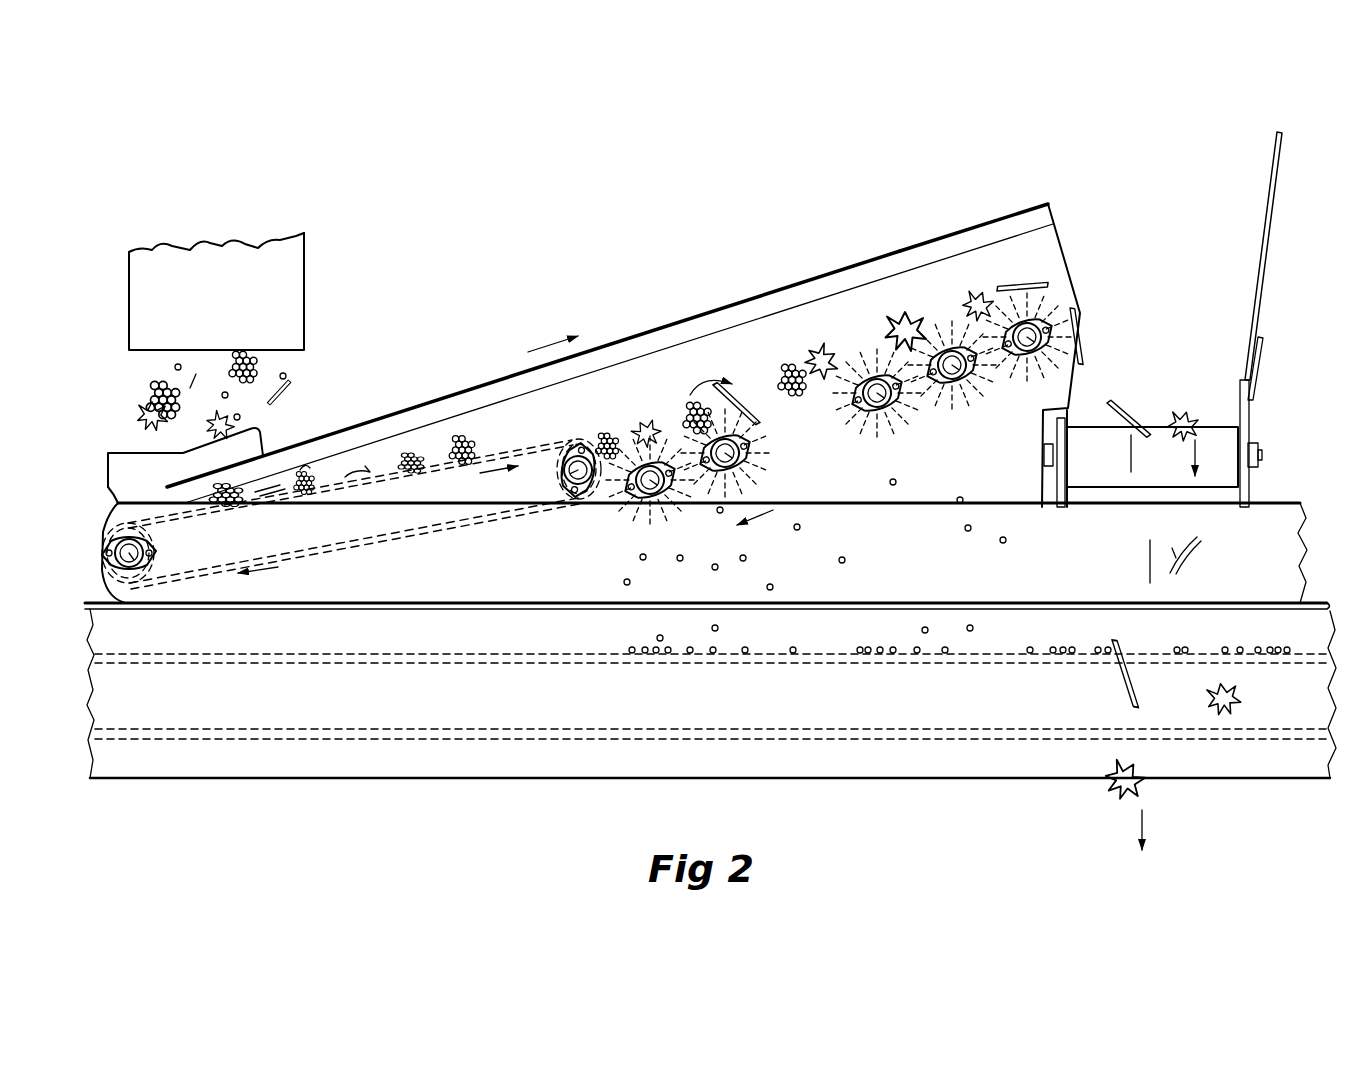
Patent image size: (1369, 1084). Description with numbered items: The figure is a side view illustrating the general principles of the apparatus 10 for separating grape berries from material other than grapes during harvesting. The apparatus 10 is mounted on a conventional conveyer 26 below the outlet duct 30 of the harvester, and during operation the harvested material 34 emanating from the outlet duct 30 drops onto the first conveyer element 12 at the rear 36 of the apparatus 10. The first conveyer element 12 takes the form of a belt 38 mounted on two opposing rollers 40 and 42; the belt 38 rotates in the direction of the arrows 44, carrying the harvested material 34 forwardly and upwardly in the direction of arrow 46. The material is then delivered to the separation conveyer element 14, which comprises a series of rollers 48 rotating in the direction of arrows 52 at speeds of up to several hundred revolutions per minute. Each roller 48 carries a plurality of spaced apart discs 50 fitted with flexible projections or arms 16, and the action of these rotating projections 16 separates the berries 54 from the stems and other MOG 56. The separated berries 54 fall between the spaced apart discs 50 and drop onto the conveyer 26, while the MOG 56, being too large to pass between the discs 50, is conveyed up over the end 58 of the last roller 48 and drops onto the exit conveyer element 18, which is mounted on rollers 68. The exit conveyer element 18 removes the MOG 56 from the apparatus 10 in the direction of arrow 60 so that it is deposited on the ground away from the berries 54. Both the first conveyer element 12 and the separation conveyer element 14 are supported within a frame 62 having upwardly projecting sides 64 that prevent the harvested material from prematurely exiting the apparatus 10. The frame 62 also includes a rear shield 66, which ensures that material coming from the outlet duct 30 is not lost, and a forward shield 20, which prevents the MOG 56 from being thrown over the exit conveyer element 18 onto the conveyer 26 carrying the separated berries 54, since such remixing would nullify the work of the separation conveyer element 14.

The apparatus 10 is at (553, 228).
The first conveyer element 12 is at (447, 390).
The separation conveyer element 14 is at (790, 248).
The projections or arms 16 is at (878, 360).
The exit conveyer element 18 is at (1164, 470).
The shield 20 is at (1265, 263).
The conveyer 26 is at (481, 708).
The outlet duct 30 is at (229, 305).
The harvested material 34 is at (140, 392).
The rear 36 is at (103, 490).
The belt 38 is at (208, 568).
The roller 40 is at (142, 567).
The roller 42 is at (590, 487).
The arrows 44 is at (493, 470).
The arrow 46 is at (552, 343).
The rollers 48 is at (647, 477).
The discs 50 is at (893, 417).
The arrows 52 is at (708, 377).
The berries 54 is at (890, 548).
The MOG 56 is at (1010, 278).
The end 58 is at (1080, 253).
The arrow 60 is at (1150, 547).
The frame 62 is at (393, 580).
The sides 64 is at (1025, 218).
The rear shield 66 is at (125, 470).
The rollers 68 is at (1262, 455).